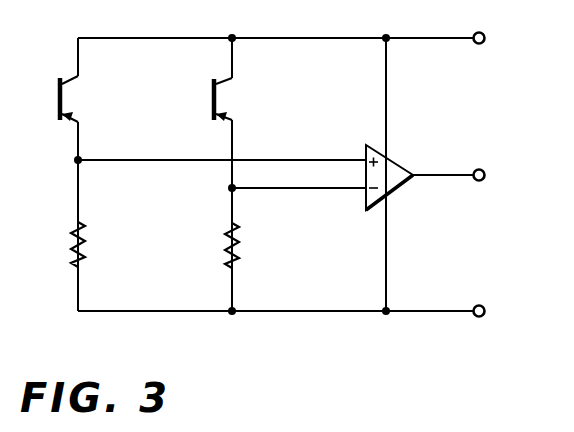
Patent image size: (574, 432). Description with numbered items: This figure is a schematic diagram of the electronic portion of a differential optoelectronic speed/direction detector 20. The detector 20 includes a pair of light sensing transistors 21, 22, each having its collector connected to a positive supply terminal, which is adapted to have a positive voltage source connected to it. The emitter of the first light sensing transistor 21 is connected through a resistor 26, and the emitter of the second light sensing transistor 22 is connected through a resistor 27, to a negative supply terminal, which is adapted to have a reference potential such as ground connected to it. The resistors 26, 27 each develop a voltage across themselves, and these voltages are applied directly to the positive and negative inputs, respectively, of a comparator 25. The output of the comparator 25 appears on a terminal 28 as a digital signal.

The differential optoelectronic speed/direction detector 20 is at (293, 350).
The light sensing transistor 21 is at (78, 98).
The light sensing transistor 22 is at (230, 98).
The comparator 25 is at (395, 190).
The resistor 26 is at (67, 245).
The resistor 27 is at (223, 248).
The terminal 28 is at (485, 169).